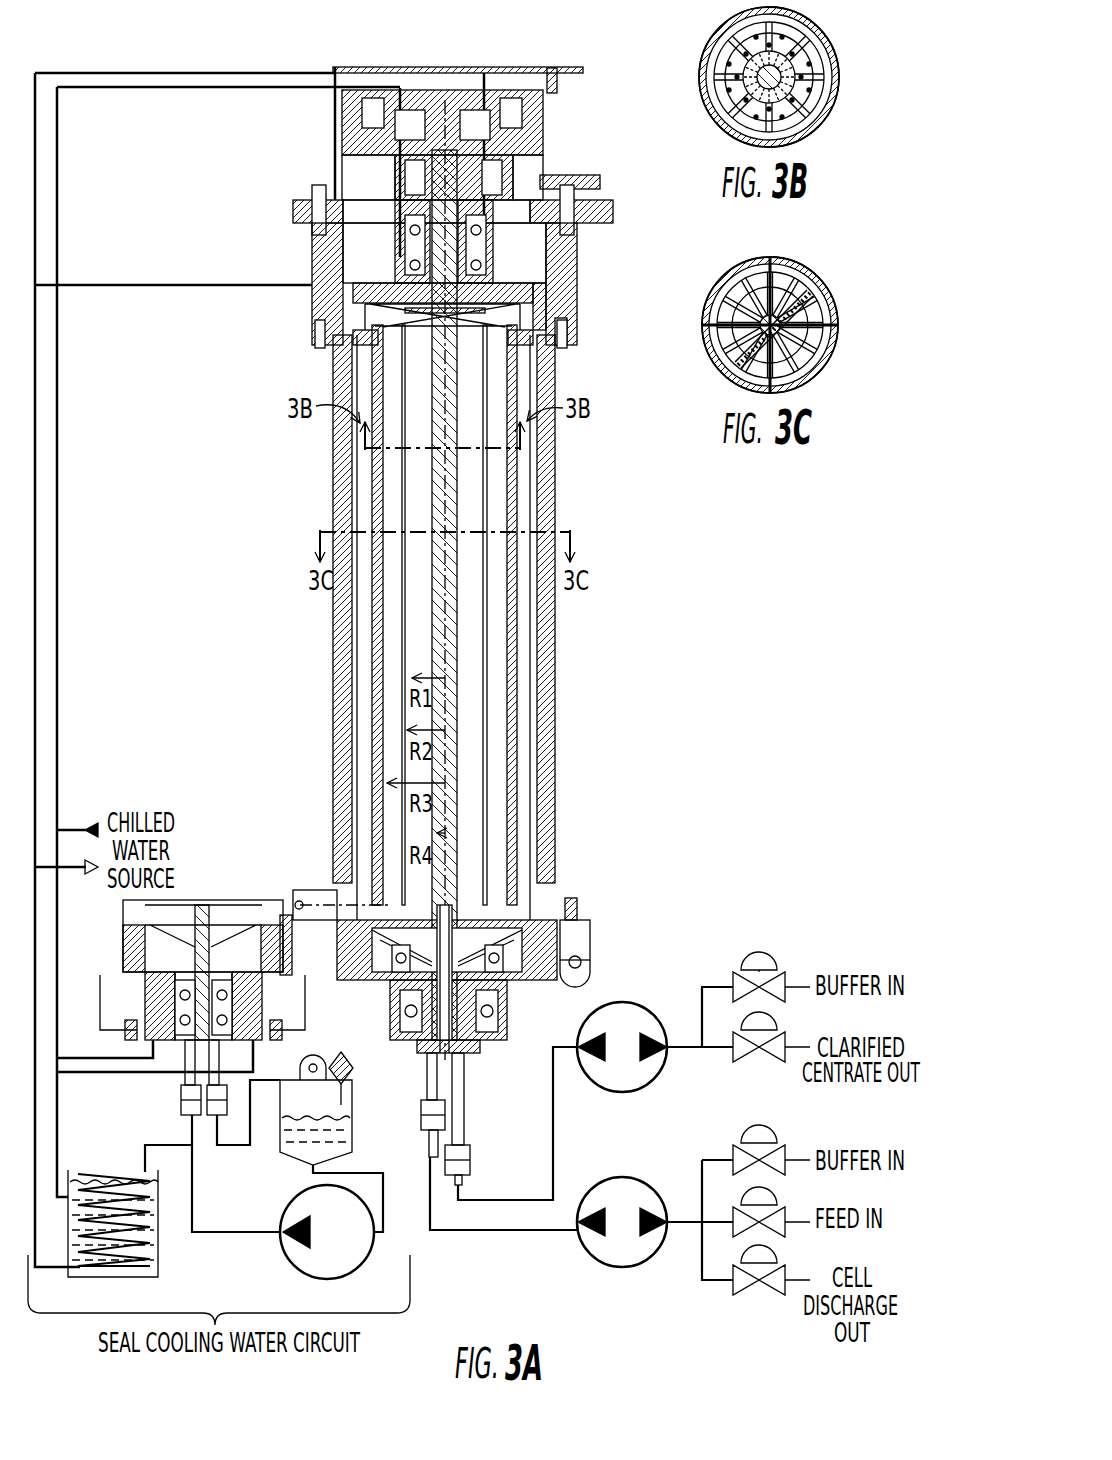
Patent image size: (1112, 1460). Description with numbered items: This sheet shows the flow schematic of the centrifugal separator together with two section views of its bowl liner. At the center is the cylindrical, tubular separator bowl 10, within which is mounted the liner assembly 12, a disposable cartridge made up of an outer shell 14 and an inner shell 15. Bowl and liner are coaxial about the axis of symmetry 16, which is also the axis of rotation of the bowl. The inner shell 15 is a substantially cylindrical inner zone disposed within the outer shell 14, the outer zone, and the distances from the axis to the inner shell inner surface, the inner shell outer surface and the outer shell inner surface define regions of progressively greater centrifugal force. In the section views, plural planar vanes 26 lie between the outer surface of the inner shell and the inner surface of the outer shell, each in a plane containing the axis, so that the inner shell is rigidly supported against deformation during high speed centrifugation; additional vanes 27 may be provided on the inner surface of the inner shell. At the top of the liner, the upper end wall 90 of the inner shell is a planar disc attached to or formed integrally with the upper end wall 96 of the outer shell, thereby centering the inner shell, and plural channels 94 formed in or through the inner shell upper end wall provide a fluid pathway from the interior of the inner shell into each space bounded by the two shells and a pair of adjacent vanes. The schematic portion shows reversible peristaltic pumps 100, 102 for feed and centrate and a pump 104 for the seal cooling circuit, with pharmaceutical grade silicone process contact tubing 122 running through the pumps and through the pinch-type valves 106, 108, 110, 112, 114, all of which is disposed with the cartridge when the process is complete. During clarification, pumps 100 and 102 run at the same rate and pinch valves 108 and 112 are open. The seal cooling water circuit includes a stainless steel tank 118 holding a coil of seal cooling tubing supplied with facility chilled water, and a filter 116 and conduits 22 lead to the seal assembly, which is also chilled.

In FIG. 3C, the separator bowl 10 is at (711, 296).
In FIG. 3A, the liner assembly 12 is at (378, 490).
In FIG. 3C, the liner assembly 12 is at (727, 386).
In FIG. 3C, the outer shell 14 is at (838, 347).
In FIG. 3C, the inner shell 15 is at (808, 353).
In FIG. 3A, the axis of symmetry 16 is at (452, 621).
In FIG. 3A, the fluid conduit 22 is at (472, 1137).
In FIG. 3C, the planar vanes 26 is at (717, 323).
In FIG. 3C, the vanes 27 is at (745, 330).
In FIG. 3A, the upper end wall of the inner shell 90 is at (418, 332).
In FIG. 3A, the channels 94 is at (416, 334).
In FIG. 3B, the channels 94 is at (737, 91).
In FIG. 3A, the upper end wall of the outer shell 96 is at (538, 296).
In FIG. 3A, the pump 100 is at (633, 1096).
In FIG. 3A, the pump 102 is at (627, 1270).
In FIG. 3A, the pump 104 is at (340, 1280).
In FIG. 3A, the pinch-type valve 106 is at (775, 952).
In FIG. 3A, the pinch valve 108 is at (778, 1015).
In FIG. 3A, the pinch-type valve 110 is at (778, 1127).
In FIG. 3A, the pinch valve 112 is at (778, 1189).
In FIG. 3A, the pinch-type valve 114 is at (778, 1251).
In FIG. 3A, the filter 116 is at (348, 1096).
In FIG. 3A, the stainless steel tank 118 is at (163, 1252).
In FIG. 3A, the process contact tubing 122 is at (196, 1194).